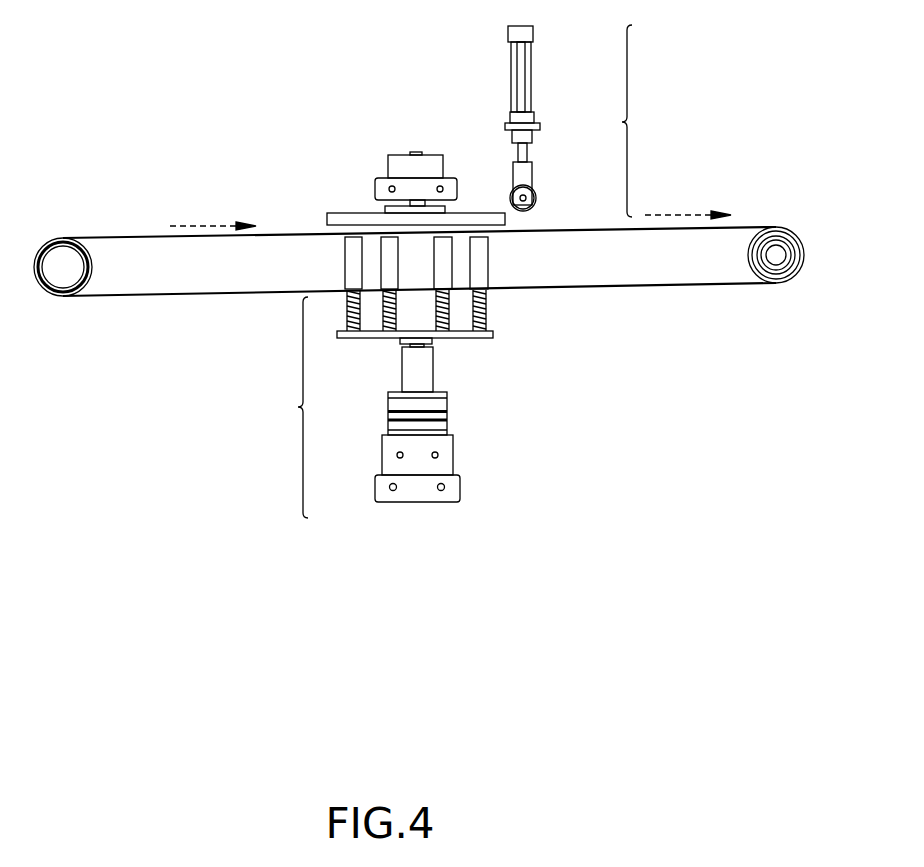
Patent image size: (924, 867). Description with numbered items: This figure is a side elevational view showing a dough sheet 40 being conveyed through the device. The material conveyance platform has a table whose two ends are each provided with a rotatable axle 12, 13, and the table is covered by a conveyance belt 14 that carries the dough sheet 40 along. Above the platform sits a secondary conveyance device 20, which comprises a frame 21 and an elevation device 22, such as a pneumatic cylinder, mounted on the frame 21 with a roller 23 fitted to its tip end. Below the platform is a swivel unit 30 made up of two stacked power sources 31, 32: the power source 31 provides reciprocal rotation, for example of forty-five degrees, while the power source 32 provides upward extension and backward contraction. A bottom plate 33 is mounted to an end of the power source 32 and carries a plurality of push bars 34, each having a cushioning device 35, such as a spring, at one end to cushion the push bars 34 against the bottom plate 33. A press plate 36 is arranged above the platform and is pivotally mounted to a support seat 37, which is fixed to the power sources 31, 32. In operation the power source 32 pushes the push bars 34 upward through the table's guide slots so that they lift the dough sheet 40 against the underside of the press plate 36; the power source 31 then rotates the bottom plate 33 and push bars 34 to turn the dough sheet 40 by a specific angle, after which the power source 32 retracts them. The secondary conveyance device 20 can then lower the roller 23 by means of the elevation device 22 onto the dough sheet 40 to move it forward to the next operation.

The rotatable axle 12 is at (774, 240).
The rotatable axle 13 is at (63, 253).
The conveyance belt 14 is at (130, 237).
The secondary conveyance device 20 is at (587, 121).
The frame 21 is at (541, 126).
The elevation device 22 is at (531, 62).
The roller 23 is at (537, 195).
The swivel unit 30 is at (435, 377).
The power source 31 is at (447, 443).
The power source 32 is at (433, 362).
The bottom plate 33 is at (493, 336).
The push bars 34 is at (488, 255).
The cushioning device 35 is at (488, 305).
The press plate 36 is at (346, 213).
The support seat 37 is at (381, 178).
The dough sheet 40 is at (301, 213).